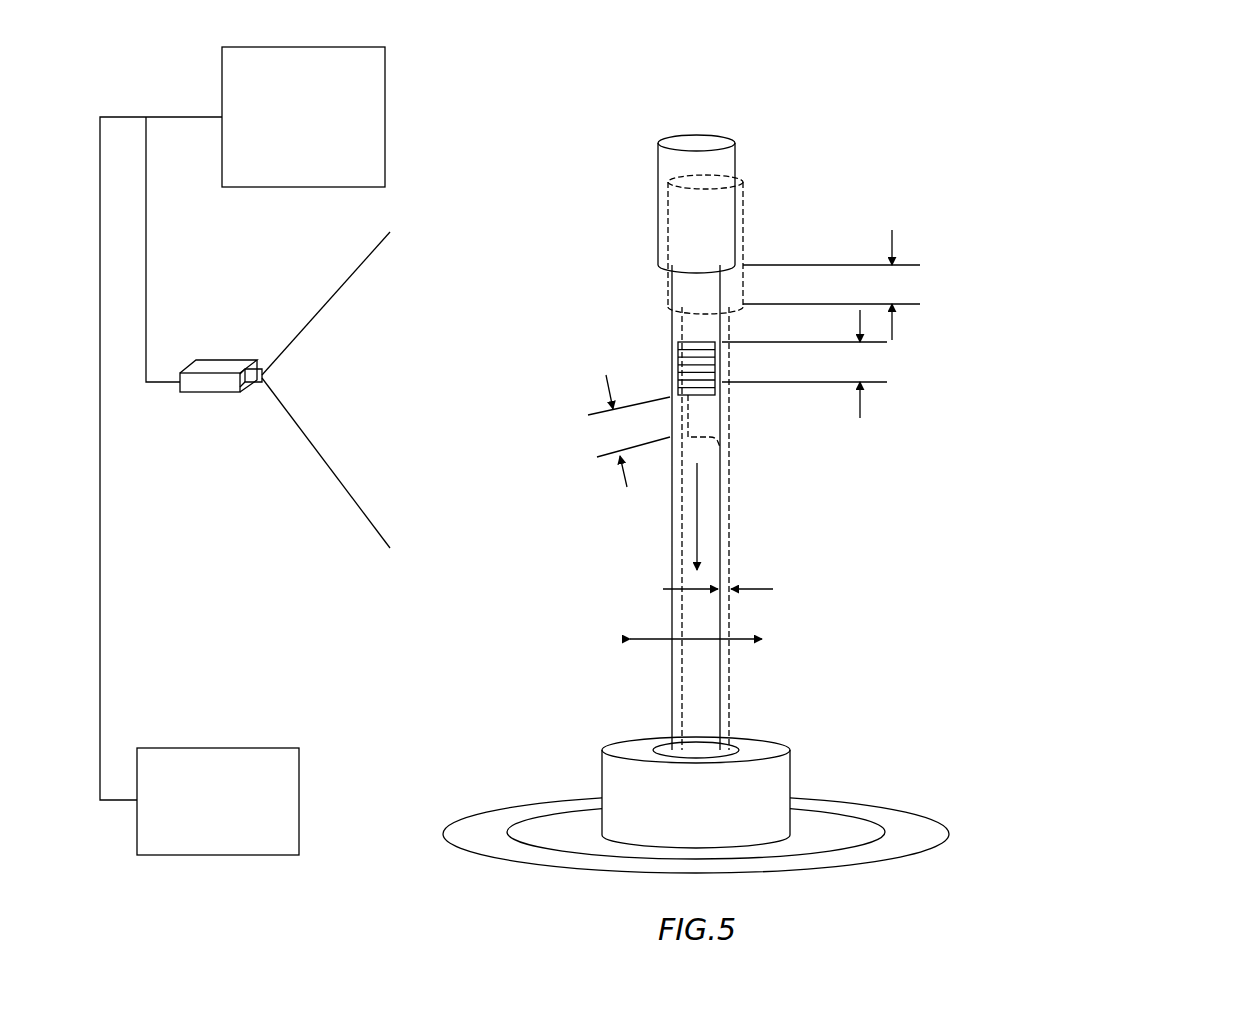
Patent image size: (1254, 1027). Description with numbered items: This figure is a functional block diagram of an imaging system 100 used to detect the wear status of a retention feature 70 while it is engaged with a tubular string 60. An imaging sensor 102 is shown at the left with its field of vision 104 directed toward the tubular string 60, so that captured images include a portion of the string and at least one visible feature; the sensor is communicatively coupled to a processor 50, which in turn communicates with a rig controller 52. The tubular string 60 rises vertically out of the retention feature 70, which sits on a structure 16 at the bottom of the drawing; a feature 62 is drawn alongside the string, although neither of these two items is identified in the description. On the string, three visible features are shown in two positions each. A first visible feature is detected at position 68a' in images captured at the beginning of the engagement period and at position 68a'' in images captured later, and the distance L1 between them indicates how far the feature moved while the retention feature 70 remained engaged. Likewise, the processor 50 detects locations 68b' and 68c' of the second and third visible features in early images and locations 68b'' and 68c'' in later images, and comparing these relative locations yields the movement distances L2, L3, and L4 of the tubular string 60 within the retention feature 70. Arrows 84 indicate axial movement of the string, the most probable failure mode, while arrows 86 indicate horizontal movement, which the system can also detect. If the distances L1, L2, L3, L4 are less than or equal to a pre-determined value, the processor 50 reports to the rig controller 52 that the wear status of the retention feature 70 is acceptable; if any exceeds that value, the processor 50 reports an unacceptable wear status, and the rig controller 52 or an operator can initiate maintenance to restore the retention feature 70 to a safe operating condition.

The imaging system 100 is at (1146, 109).
The processor 50 is at (317, 130).
The rig controller 52 is at (225, 813).
The imaging sensor 102 is at (202, 393).
The field of vision 104 is at (343, 375).
The position of visible feature 68a 68a' is at (619, 204).
The position of visible feature 68a 68a'' is at (623, 244).
The location of visible feature 68b 68b' is at (632, 353).
The location of visible feature 68b 68b'' is at (635, 396).
The location of visible feature 68c 68c' is at (778, 418).
The location of visible feature 68c 68c'' is at (786, 461).
The tubular string 60 is at (673, 708).
The tube wall 62 is at (722, 718).
The retention feature 70 is at (710, 815).
The dish 16 is at (497, 840).
The arrows 84 is at (697, 519).
The arrows 86 is at (662, 639).
The distance L1 is at (831, 285).
The distance L2 is at (804, 364).
The distance L3 is at (762, 589).
The distance L4 is at (629, 431).